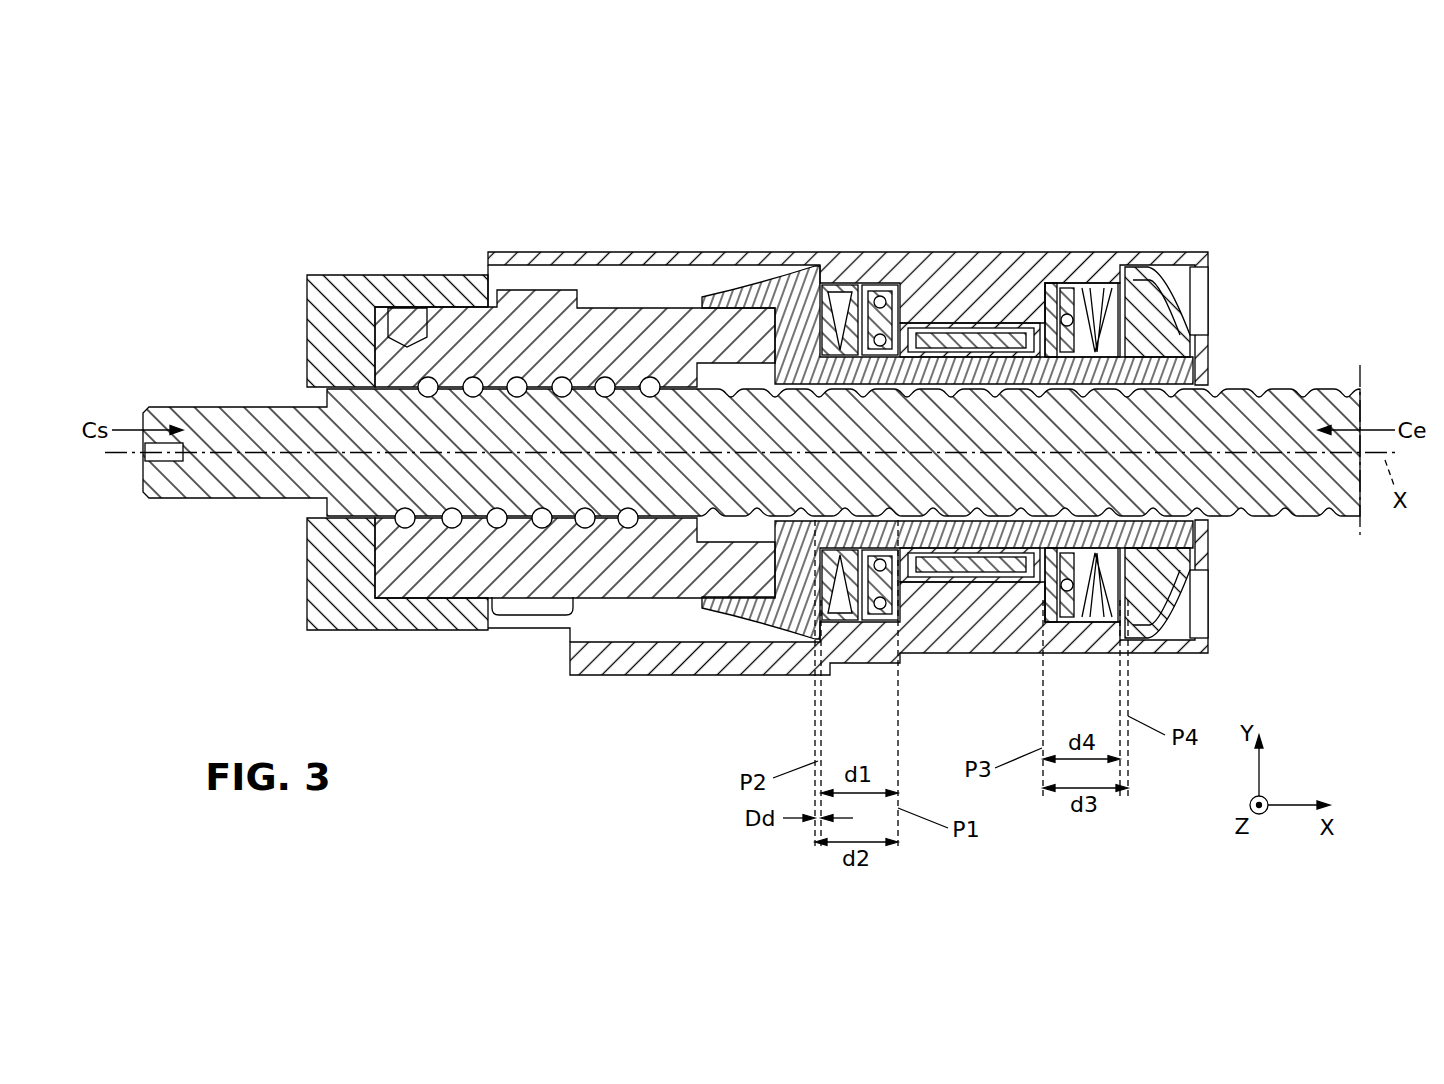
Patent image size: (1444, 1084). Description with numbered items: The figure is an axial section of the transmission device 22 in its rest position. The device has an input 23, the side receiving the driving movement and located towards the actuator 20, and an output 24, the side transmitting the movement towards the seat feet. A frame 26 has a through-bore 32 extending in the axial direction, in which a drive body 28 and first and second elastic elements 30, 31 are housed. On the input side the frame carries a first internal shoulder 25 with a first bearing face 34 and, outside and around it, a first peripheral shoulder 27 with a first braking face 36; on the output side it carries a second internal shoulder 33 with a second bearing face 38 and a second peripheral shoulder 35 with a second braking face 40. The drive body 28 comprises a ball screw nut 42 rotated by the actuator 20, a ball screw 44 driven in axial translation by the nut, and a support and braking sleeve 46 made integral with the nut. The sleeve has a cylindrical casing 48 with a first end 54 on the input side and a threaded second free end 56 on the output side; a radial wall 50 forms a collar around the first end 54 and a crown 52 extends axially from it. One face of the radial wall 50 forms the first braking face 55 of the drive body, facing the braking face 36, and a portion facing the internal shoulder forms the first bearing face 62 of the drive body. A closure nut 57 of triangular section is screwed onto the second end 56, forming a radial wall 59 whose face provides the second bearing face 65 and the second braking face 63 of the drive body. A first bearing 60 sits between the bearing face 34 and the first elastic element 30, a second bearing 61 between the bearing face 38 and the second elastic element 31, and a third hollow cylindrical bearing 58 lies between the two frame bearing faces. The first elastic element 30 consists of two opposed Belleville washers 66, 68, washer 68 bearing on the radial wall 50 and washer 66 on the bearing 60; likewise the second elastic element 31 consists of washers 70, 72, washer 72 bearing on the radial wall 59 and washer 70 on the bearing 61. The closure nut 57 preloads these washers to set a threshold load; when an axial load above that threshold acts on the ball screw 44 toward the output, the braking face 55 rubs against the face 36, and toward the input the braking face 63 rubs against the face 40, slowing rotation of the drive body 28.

The actuator 20 is at (300, 324).
The transmission device 22 is at (846, 668).
The input 23 is at (821, 262).
The output 24 is at (1226, 204).
The first internal shoulder 25 is at (863, 254).
The frame 26 is at (532, 254).
The first peripheral shoulder 27 is at (778, 251).
The drive body 28 is at (401, 615).
The first elastic element 30 is at (781, 254).
The second elastic element 31 is at (1142, 247).
The through-bore 32 is at (597, 628).
The second internal shoulder 33 is at (1037, 245).
The first bearing face 34 is at (884, 290).
The second peripheral shoulder 35 is at (1145, 256).
The first braking face 36 is at (824, 272).
The second bearing face 38 is at (1045, 283).
The second braking face 40 is at (1133, 318).
The ball screw nut 42 is at (440, 306).
The ball screw 44 is at (1298, 388).
The support and braking sleeve 46 is at (985, 332).
The cylindrical casing 48 is at (961, 261).
The radial wall 50 is at (918, 633).
The crown 52 is at (718, 616).
The first end 54 is at (918, 641).
The first braking face of the drive body 55 is at (812, 276).
The second free end 56 is at (1211, 621).
The closure nut 57 is at (1205, 538).
The third hollow cylindrical bearing 58 is at (965, 322).
The radial wall 59 is at (1090, 330).
The first bearing 60 is at (864, 655).
The second bearing 61 is at (1048, 612).
The first bearing face of the drive body 62 is at (836, 657).
The second braking face of the drive body 63 is at (1150, 262).
The second bearing face of the drive body 65 is at (1193, 620).
The spring washer 66 is at (862, 657).
The spring washer 68 is at (833, 612).
The spring washer 70 is at (1095, 342).
The spring washer 72 is at (1100, 308).